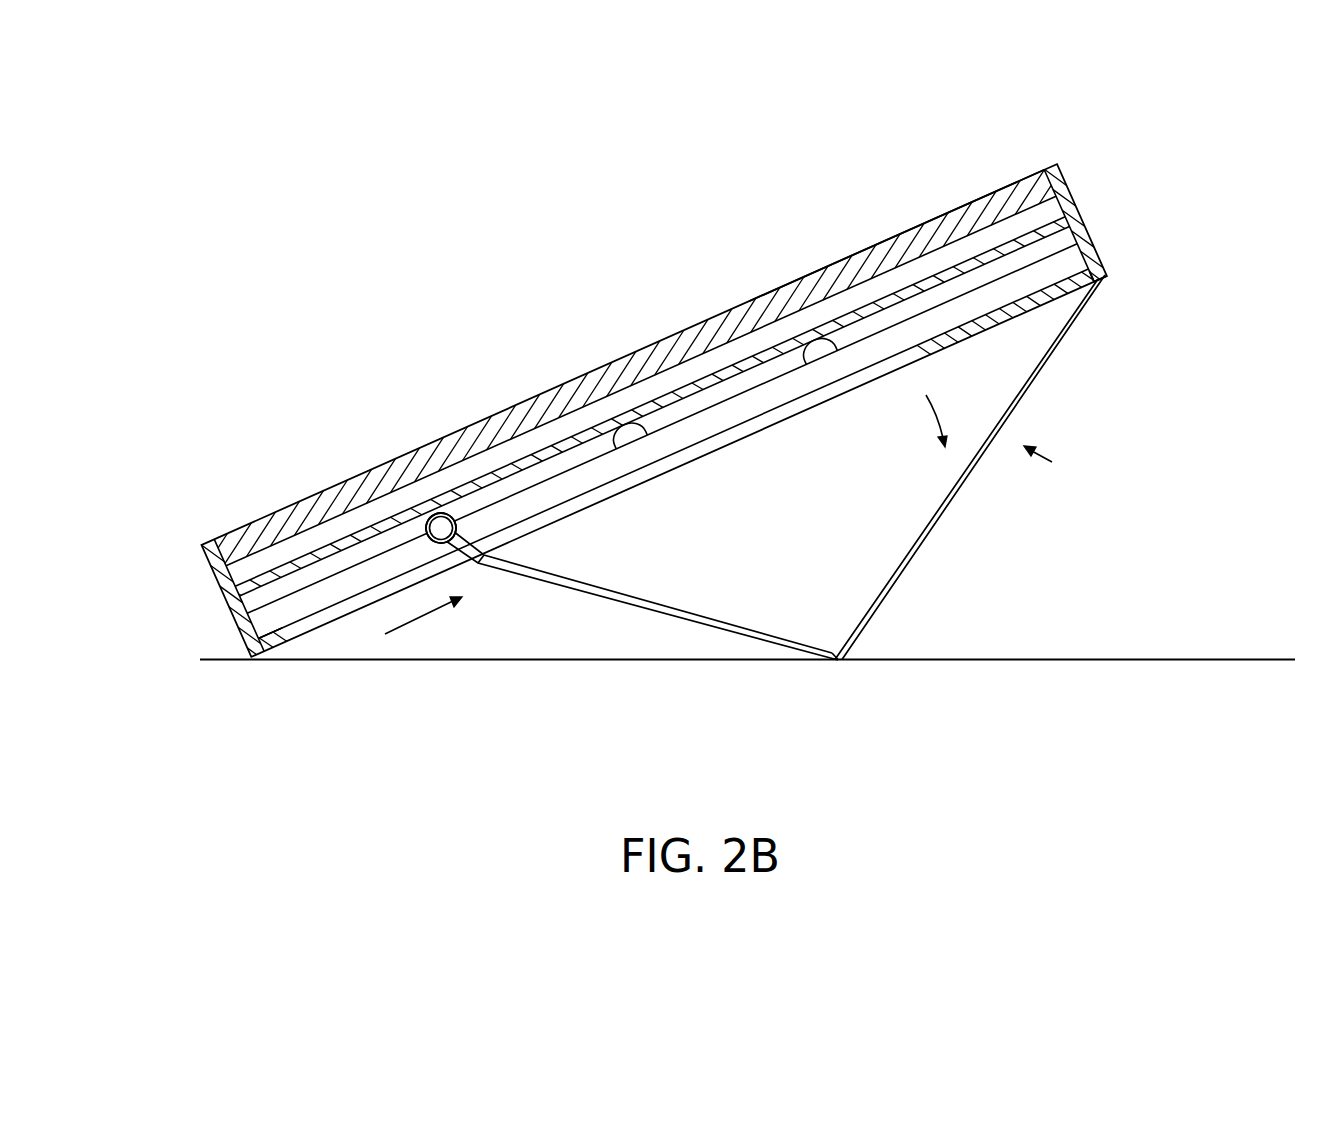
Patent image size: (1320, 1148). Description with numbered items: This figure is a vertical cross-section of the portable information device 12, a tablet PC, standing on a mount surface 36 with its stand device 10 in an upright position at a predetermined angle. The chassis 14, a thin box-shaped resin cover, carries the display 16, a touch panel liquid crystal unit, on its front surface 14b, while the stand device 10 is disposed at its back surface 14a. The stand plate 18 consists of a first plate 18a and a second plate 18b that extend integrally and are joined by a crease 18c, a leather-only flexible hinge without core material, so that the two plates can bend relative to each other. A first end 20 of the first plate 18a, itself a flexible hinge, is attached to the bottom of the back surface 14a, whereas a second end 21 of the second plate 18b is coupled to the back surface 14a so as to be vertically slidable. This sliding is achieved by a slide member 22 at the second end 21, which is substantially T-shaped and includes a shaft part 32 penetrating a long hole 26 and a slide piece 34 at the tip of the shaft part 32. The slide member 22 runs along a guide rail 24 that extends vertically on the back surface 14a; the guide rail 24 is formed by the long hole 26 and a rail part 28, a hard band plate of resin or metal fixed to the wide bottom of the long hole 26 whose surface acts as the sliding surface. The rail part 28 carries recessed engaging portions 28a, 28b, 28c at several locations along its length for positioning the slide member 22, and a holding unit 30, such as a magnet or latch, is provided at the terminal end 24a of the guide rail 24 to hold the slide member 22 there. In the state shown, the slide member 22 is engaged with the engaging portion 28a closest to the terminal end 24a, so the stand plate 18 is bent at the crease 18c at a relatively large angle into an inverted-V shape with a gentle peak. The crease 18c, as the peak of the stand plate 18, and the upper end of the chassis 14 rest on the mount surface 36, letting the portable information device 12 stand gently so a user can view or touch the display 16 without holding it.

The stand device 10 is at (1051, 463).
The portable information device 12 is at (175, 213).
The chassis 14 is at (1073, 191).
The back surface 14a is at (992, 325).
The front surface 14b is at (841, 266).
The display 16 is at (905, 234).
The stand plate 18 is at (775, 514).
The first plate 18a is at (875, 628).
The second plate 18b is at (790, 656).
The crease 18c is at (840, 683).
The first end 20 is at (1110, 277).
The second end 21 is at (478, 566).
The slide member 22 is at (467, 438).
The guide rail 24 is at (661, 426).
The terminal end 24a is at (270, 633).
The long hole 26 is at (660, 473).
The rail part 28 is at (721, 384).
The engaging portion 28a is at (428, 519).
The engaging portion 28b is at (616, 452).
The engaging portion 28c is at (808, 368).
The holding unit 30 is at (255, 647).
The shaft part 32 is at (456, 518).
The slide piece 34 is at (441, 526).
The mount surface 36 is at (1228, 657).